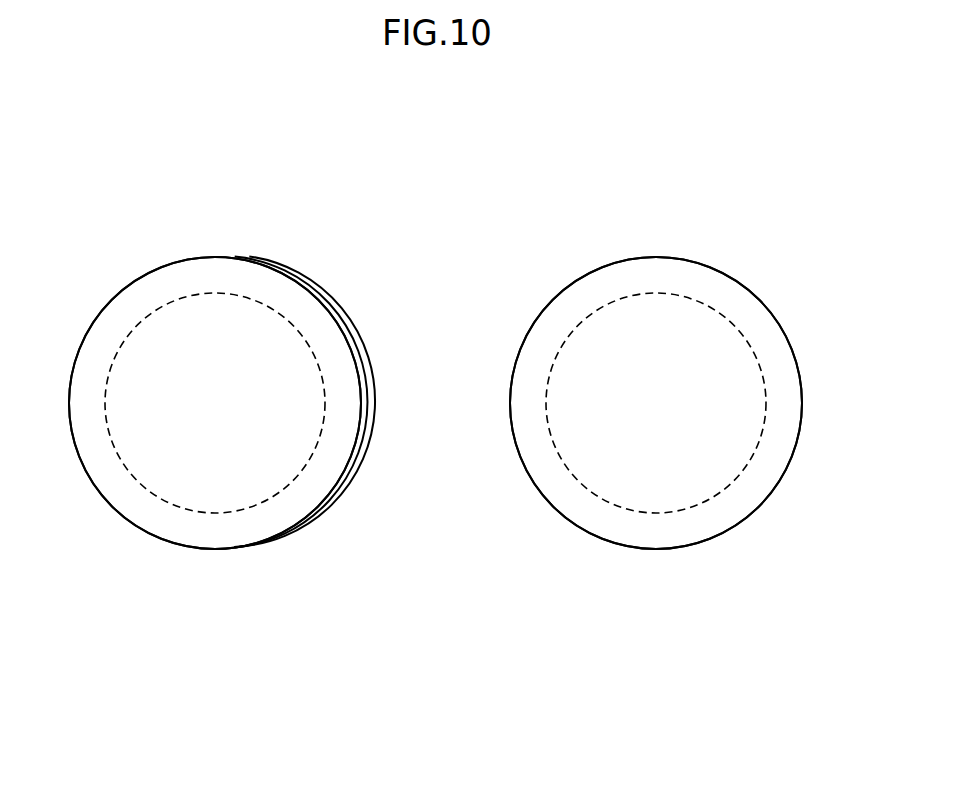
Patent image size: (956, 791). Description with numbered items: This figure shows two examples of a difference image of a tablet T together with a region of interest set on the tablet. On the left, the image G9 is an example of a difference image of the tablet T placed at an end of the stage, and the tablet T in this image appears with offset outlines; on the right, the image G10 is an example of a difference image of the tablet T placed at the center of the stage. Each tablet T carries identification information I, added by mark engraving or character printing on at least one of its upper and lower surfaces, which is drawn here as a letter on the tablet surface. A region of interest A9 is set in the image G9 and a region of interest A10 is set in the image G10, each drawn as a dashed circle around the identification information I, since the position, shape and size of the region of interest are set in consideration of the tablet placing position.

The tablet T is at (213, 257).
The image G9 is at (303, 216).
The image G10 is at (744, 216).
The region of interest A9 is at (295, 320).
The region of interest A10 is at (736, 320).
The identification information I is at (197, 371).